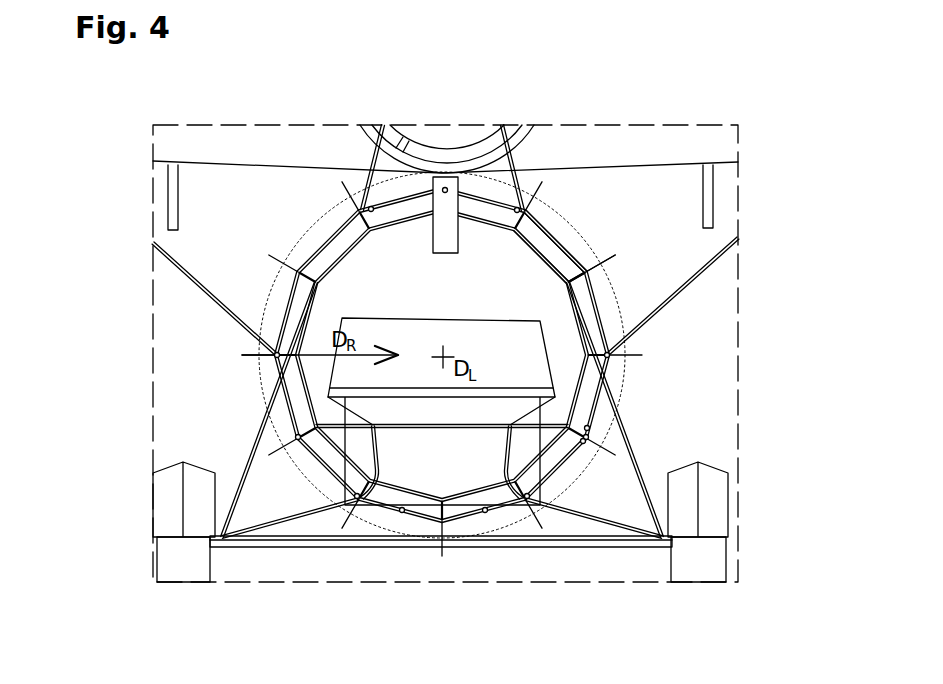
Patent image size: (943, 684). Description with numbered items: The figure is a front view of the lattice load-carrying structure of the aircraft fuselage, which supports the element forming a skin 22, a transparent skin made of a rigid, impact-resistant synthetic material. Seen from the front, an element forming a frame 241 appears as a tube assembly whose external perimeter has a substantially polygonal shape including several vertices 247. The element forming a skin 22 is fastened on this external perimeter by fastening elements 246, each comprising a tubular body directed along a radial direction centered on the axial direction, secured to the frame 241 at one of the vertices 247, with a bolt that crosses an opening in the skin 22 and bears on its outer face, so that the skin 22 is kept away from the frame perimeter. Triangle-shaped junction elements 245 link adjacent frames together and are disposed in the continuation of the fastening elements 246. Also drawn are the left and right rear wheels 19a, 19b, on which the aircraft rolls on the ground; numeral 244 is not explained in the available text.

The element forming a skin 22 is at (272, 301).
The element forming a frame 241 is at (558, 242).
The inner rail segment 244 is at (535, 255).
The triangle-shaped junction element 245 is at (322, 272).
The fastening element 246 is at (604, 279).
The vertices 247 is at (622, 383).
The left rear wheel 19a is at (690, 550).
The right rear wheel 19b is at (178, 567).